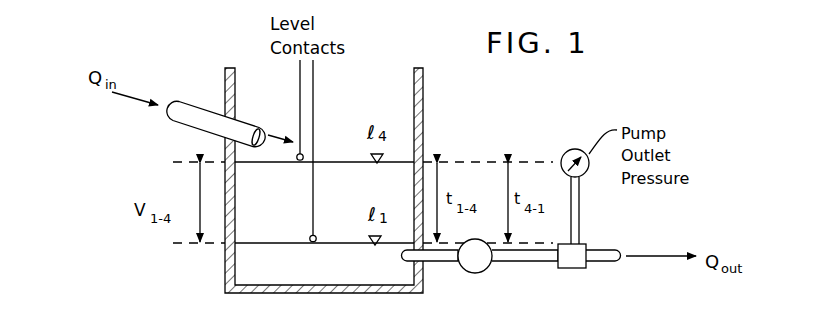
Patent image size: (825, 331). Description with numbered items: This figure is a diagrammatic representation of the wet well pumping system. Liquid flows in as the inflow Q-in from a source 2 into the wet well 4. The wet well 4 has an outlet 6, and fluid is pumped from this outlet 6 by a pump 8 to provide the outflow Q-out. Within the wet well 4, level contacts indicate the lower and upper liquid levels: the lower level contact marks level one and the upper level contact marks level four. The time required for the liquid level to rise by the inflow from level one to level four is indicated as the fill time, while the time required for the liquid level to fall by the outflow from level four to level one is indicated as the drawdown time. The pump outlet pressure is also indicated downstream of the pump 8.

The source 2 is at (175, 124).
The wet well 4 is at (423, 121).
The outlet 6 is at (437, 262).
The pump 8 is at (488, 269).